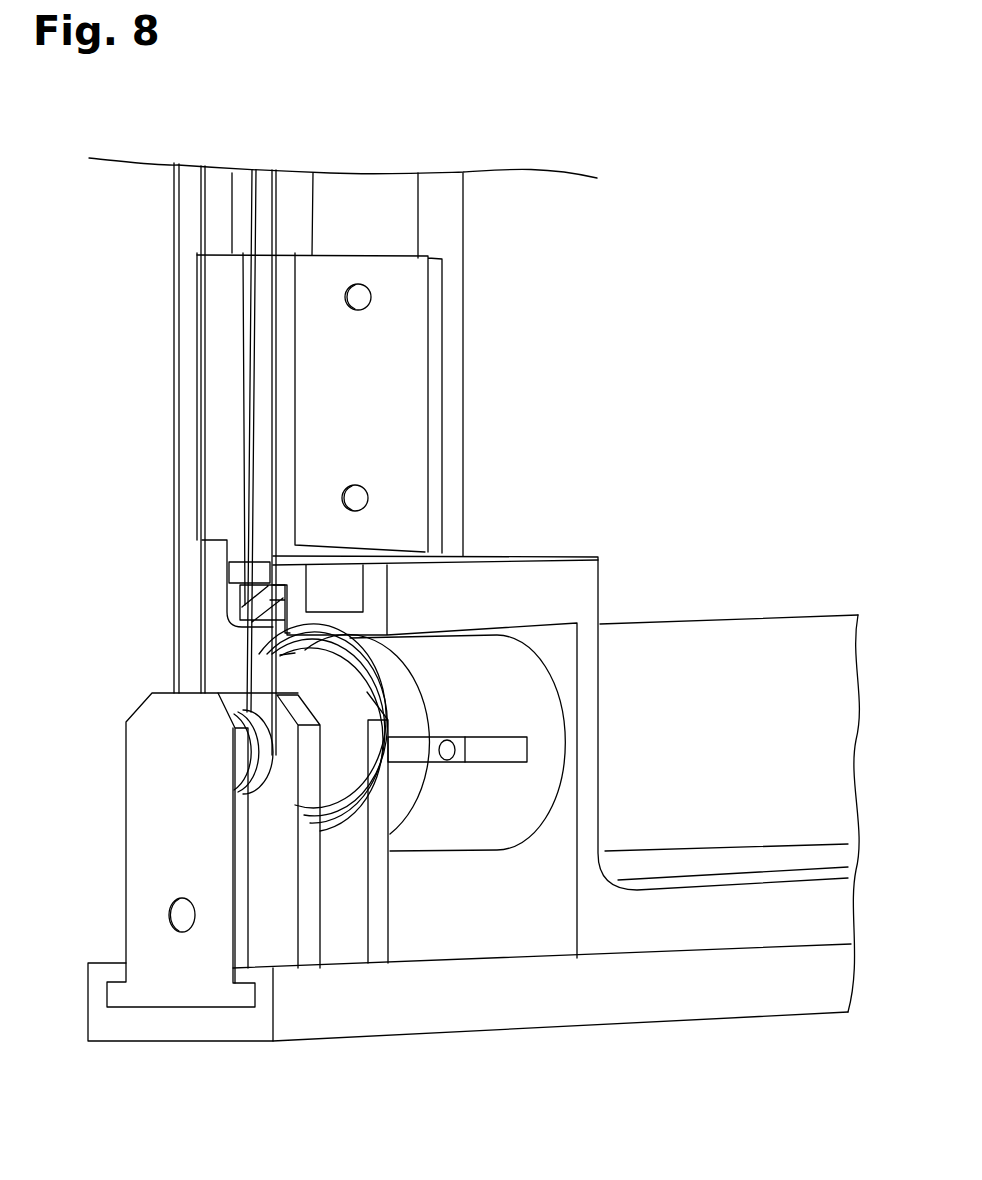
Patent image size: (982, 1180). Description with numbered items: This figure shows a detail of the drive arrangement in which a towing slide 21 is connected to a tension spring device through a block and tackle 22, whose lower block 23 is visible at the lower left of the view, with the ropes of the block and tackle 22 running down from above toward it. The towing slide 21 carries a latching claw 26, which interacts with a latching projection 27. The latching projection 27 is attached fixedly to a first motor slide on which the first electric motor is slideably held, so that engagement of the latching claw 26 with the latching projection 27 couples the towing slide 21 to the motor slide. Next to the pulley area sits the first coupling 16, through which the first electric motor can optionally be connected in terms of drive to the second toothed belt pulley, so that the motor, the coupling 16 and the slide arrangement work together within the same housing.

The first coupling 16 is at (462, 795).
The towing slide 21 is at (225, 443).
The block and tackle 22 is at (176, 218).
The lower block 23 is at (178, 862).
The latching claw 26 is at (240, 613).
The latching projection 27 is at (237, 575).